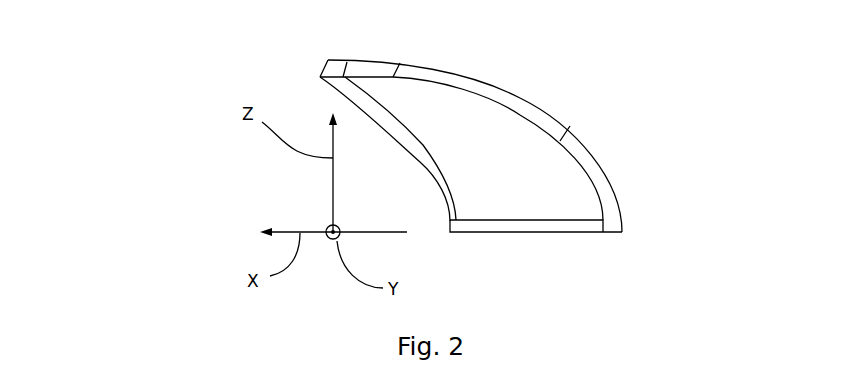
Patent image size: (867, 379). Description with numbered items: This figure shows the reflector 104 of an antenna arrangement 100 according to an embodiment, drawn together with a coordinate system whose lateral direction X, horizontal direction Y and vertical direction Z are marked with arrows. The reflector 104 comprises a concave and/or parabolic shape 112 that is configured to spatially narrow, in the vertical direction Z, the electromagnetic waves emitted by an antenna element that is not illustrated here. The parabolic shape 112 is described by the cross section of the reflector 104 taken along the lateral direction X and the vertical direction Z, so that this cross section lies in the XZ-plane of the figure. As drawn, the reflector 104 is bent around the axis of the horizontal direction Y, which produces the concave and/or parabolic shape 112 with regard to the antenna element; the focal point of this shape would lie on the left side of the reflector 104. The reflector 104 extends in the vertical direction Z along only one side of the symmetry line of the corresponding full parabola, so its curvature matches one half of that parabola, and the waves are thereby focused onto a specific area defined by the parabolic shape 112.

The fin assembly 100 is at (392, 128).
The reflector 104 is at (480, 128).
The concave and/or parabolic shape 112 is at (330, 100).